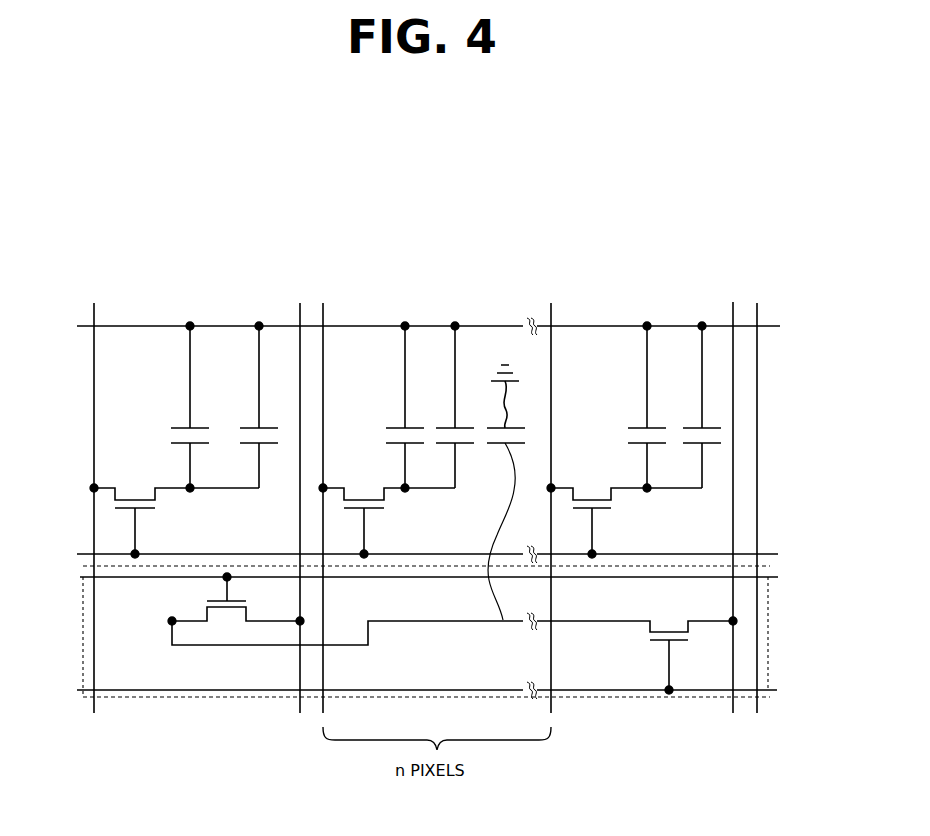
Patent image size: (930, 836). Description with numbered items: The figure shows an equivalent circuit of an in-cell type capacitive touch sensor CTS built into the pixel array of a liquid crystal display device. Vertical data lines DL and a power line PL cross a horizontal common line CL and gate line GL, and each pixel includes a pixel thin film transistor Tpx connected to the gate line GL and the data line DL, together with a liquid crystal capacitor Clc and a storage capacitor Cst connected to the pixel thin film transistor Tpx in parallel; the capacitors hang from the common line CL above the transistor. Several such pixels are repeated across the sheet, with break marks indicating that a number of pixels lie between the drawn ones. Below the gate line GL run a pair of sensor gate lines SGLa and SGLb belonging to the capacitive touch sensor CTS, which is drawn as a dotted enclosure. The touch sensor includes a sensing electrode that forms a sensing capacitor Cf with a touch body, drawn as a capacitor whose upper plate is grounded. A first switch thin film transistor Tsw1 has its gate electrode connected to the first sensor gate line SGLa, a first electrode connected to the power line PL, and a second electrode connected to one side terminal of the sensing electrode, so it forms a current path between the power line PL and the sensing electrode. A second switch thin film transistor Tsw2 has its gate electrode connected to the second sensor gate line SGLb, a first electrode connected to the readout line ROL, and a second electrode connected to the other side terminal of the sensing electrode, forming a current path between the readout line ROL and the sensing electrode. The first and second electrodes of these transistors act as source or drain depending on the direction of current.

The data line DL is at (434, 496).
The power line PL is at (290, 306).
The readout line ROL is at (732, 496).
The common line CL is at (441, 326).
The gate line GL is at (409, 552).
The first sensor gate line SGLa is at (402, 577).
The second sensor gate line SGLb is at (448, 690).
The capacitive touch sensor CTS is at (770, 626).
The pixel thin film transistor Tpx is at (396, 512).
The liquid crystal capacitor Clc is at (418, 405).
The storage capacitor Cst is at (480, 405).
The sensing capacitor Cf is at (503, 492).
The first switch thin film transistor Tsw1 is at (345, 609).
The second switch thin film transistor Tsw2 is at (632, 646).